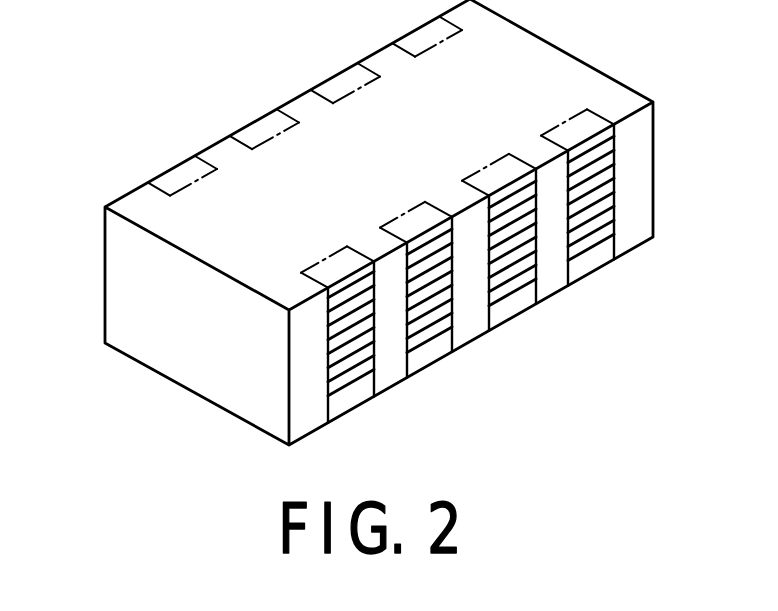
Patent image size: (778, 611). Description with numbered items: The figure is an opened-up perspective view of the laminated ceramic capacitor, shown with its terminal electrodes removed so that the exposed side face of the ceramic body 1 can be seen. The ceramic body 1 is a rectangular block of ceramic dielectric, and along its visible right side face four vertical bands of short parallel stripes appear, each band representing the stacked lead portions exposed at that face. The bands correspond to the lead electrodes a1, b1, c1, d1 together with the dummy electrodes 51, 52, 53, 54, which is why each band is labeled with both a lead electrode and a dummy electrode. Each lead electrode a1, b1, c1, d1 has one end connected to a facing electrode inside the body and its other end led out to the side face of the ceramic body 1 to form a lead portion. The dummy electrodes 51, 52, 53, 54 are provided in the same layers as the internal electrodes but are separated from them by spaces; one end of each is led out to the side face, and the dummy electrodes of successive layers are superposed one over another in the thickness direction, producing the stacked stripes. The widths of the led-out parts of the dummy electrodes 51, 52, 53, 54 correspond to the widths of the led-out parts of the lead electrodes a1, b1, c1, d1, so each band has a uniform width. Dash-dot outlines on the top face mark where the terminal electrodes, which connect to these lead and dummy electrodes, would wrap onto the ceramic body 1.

The ceramic body 1 is at (118, 252).
The dummy electrode 51 is at (598, 219).
The dummy electrode 52 is at (521, 263).
The dummy electrode 53 is at (438, 310).
The dummy electrode 54 is at (359, 355).
The lead electrode a1 is at (570, 264).
The lead electrode b1 is at (492, 322).
The lead electrode c1 is at (408, 358).
The lead electrode d1 is at (329, 402).